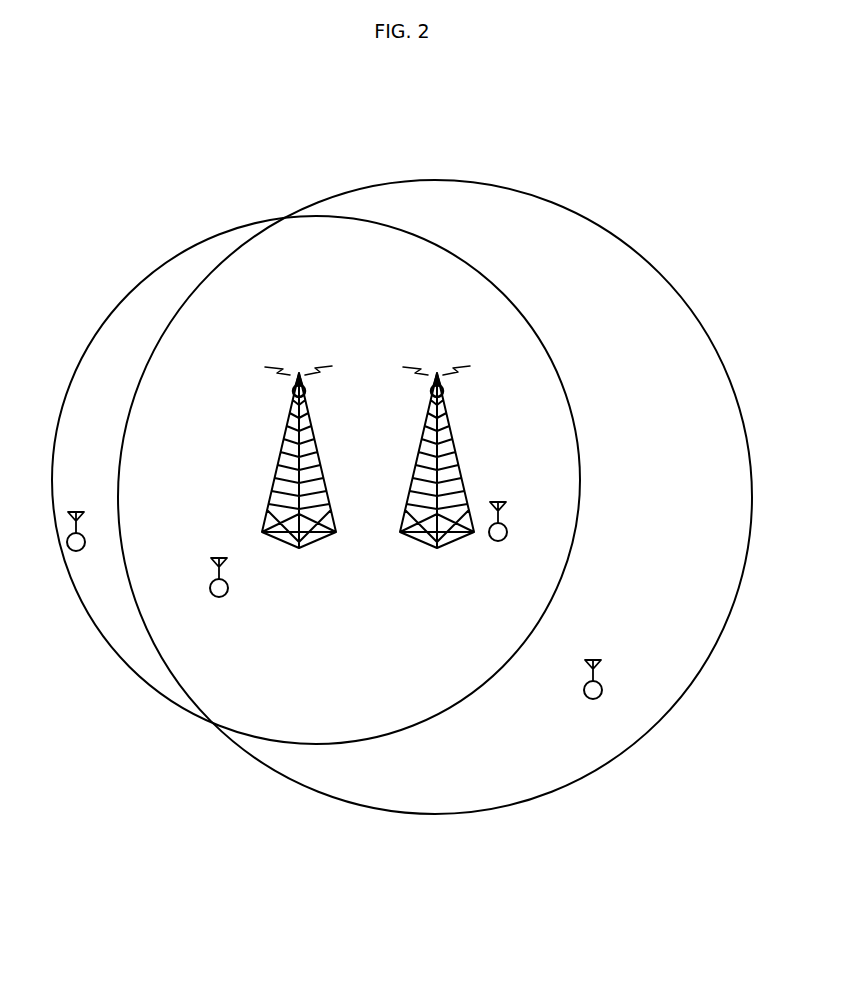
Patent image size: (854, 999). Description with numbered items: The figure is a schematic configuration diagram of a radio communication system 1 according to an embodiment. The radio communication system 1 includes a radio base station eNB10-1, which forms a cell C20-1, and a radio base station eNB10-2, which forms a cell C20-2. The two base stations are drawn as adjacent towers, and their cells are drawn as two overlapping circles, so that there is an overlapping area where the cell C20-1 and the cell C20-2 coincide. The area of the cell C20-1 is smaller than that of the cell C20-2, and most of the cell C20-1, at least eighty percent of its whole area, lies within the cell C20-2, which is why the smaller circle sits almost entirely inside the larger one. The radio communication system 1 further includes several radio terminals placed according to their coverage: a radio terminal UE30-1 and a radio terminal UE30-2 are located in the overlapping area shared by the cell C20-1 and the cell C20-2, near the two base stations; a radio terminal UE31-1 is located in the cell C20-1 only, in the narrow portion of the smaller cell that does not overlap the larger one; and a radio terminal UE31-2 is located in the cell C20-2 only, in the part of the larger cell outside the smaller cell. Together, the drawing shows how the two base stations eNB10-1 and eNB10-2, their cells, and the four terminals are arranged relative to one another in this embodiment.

The radio communication system 1 is at (470, 93).
The cell C20-1 is at (137, 288).
The cell C20-2 is at (583, 215).
The radio base station eNB10-1 is at (278, 457).
The radio base station eNB10-2 is at (515, 427).
The radio terminal UE30-1 is at (228, 588).
The radio terminal UE30-2 is at (498, 541).
The radio terminal UE31-1 is at (85, 541).
The radio terminal UE31-2 is at (590, 699).